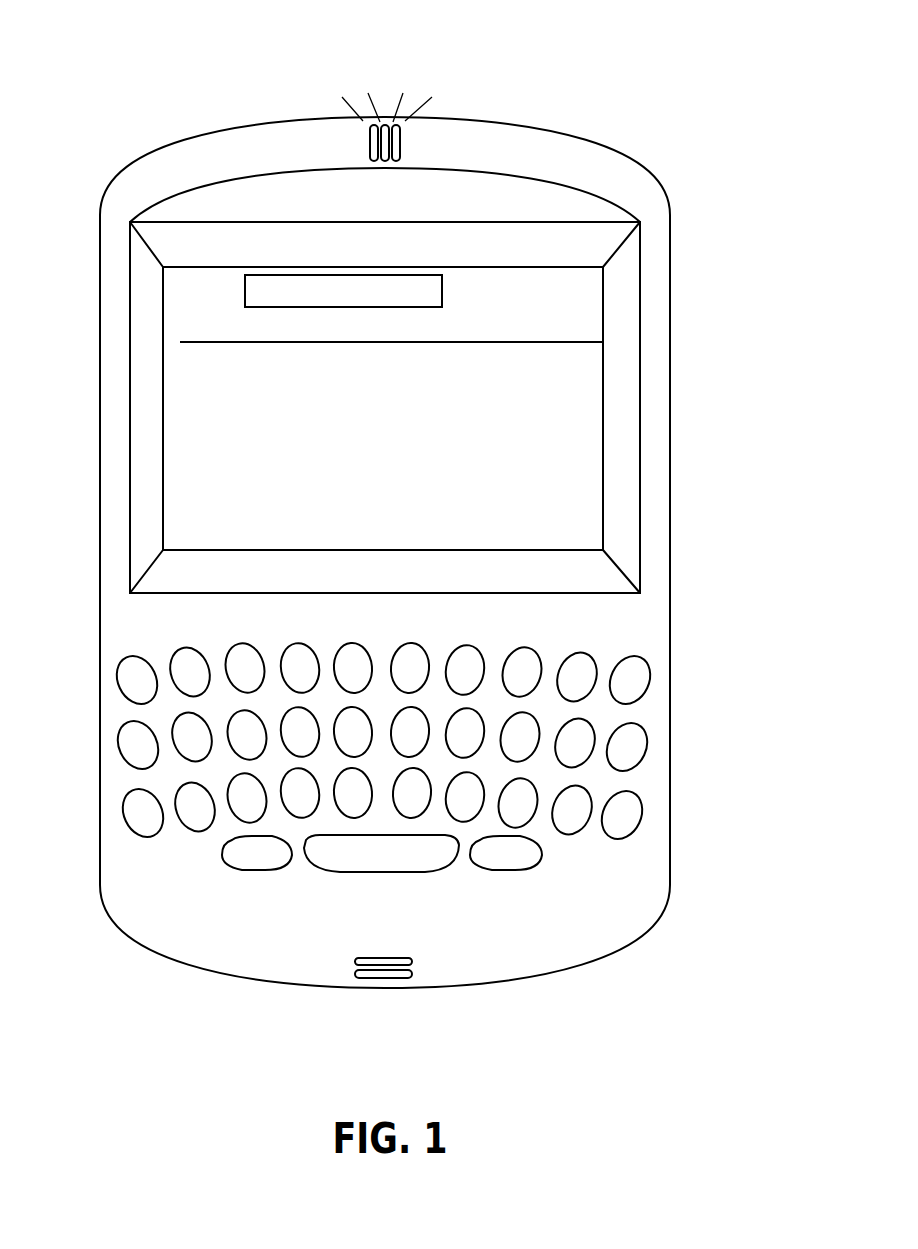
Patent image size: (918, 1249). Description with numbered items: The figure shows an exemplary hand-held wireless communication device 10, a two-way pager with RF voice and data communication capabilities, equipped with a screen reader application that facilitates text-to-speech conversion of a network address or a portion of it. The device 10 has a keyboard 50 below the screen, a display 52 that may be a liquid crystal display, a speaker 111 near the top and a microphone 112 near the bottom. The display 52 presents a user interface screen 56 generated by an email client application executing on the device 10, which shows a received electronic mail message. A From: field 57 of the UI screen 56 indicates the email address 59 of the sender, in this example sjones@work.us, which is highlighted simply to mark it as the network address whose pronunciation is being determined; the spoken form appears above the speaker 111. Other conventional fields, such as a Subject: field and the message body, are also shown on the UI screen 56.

The hand-held wireless communication device 10 is at (690, 52).
The speaker 111 is at (409, 138).
The microphone 112 is at (346, 968).
The keyboard 50 is at (165, 634).
The display 52 is at (603, 497).
The UI screen 56 is at (328, 311).
The From: field 57 is at (176, 292).
The email address 59 is at (442, 292).